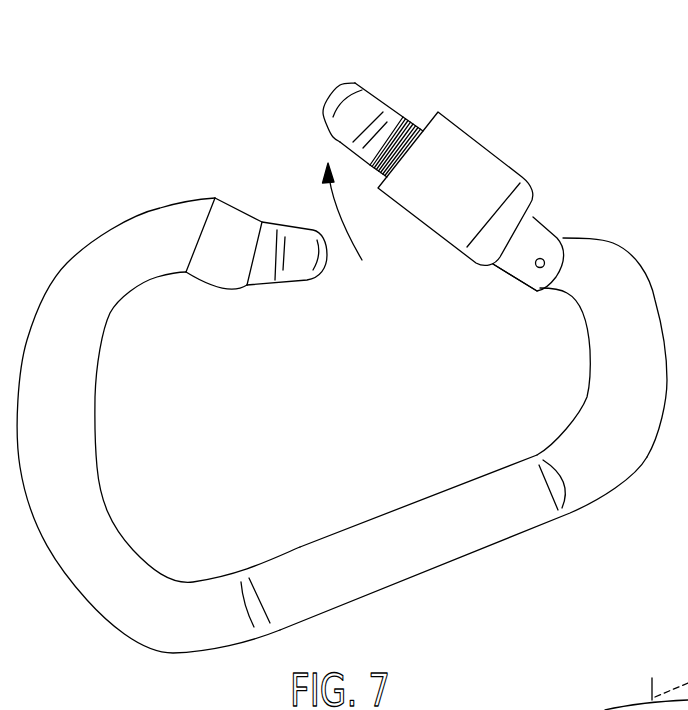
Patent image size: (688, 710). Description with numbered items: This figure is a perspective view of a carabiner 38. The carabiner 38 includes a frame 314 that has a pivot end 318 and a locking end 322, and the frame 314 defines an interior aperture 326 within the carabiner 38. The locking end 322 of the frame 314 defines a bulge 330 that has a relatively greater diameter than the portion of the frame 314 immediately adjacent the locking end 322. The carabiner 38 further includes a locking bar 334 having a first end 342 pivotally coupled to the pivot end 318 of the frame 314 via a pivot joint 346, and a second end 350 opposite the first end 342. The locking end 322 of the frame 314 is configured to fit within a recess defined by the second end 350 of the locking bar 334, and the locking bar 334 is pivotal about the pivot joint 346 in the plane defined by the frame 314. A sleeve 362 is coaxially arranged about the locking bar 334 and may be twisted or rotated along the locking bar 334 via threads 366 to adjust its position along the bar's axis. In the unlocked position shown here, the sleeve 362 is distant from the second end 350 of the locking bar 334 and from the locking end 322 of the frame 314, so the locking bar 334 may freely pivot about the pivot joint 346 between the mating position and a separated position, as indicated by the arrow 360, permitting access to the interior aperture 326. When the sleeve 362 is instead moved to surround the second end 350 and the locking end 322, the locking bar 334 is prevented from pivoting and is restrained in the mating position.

The carabiner 38 is at (572, 105).
The frame 314 is at (187, 638).
The pivot end 318 is at (587, 258).
The locking end 322 is at (275, 257).
The interior aperture 326 is at (450, 460).
The bulge 330 is at (298, 268).
The locking bar 334 is at (517, 264).
The first end 342 is at (528, 281).
The pivot joint 346 is at (541, 256).
The second end 350 is at (373, 95).
The arrow 360 is at (333, 205).
The sleeve 362 is at (485, 163).
The threads 366 is at (413, 118).